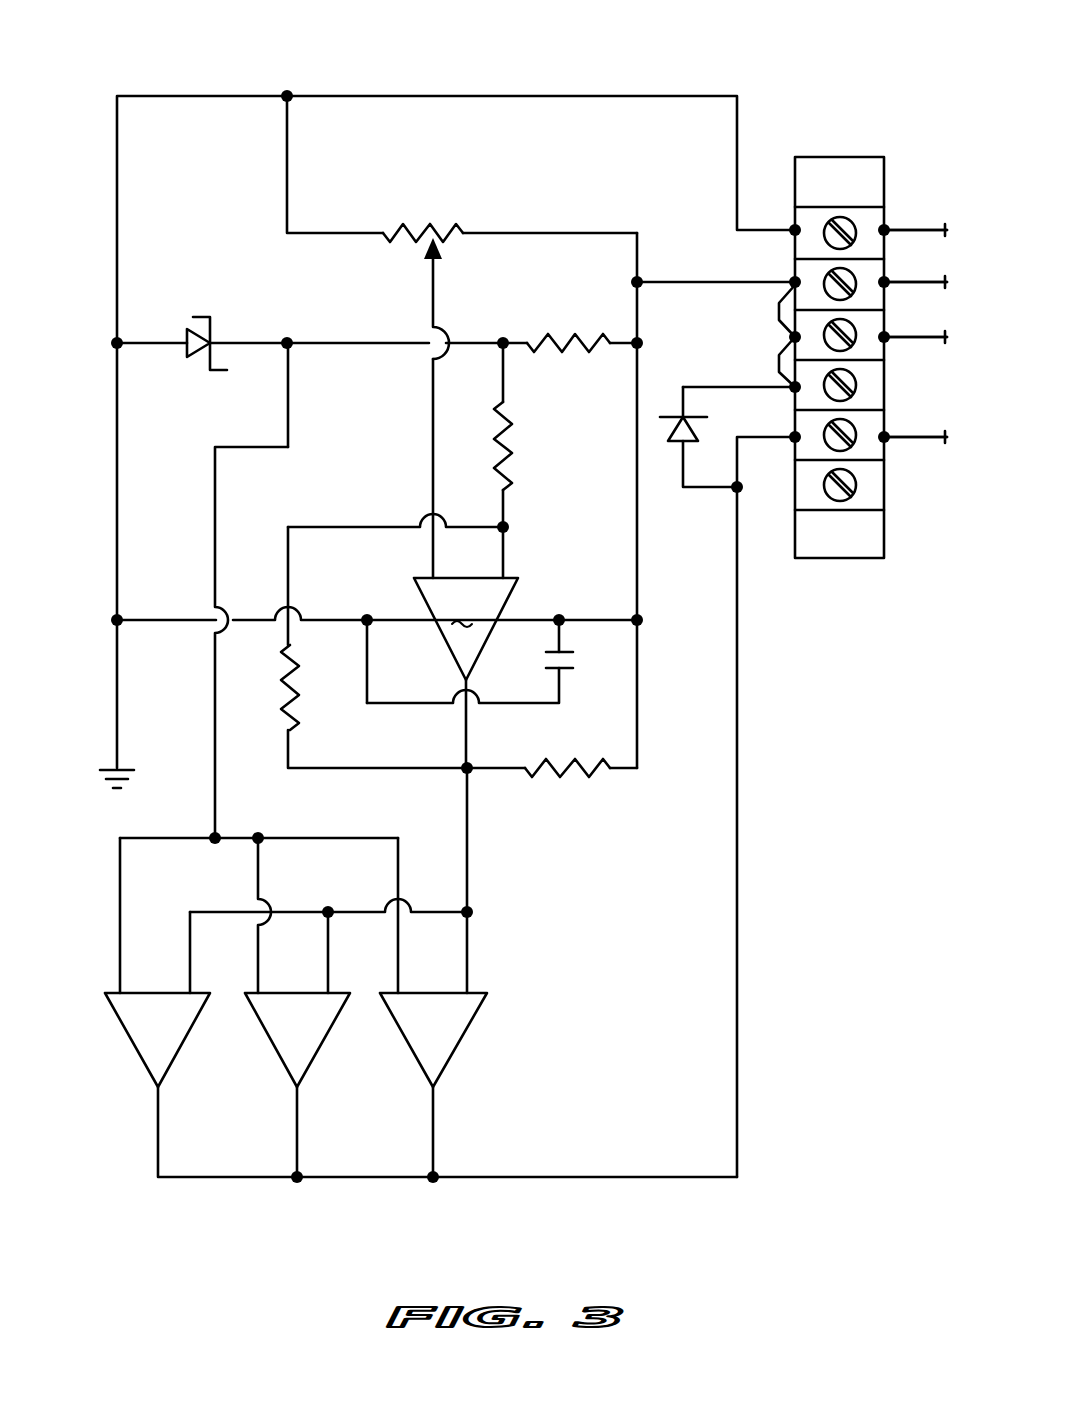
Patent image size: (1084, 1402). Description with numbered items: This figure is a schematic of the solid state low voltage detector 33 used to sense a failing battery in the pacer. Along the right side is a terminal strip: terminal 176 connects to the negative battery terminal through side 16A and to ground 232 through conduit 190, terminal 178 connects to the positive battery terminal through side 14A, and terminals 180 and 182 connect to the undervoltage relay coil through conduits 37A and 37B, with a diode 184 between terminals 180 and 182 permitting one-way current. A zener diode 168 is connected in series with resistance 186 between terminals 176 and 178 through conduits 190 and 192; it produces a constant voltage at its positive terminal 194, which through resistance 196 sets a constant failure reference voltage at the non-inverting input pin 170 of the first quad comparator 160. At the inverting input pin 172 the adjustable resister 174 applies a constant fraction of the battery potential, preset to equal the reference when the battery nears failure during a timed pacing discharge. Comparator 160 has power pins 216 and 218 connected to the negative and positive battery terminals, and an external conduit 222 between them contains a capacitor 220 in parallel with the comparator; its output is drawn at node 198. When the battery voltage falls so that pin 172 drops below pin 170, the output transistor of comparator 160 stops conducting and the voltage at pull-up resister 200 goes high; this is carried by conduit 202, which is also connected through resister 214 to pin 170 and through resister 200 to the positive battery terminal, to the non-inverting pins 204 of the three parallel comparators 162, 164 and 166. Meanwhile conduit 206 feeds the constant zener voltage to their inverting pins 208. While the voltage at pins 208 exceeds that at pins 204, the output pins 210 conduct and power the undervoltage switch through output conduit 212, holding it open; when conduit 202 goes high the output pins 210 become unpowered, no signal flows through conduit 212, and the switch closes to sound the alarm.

The low voltage detector 33 is at (775, 62).
The conduit 190 is at (553, 95).
The adjustable resister 174 is at (420, 232).
The zener diode 168 is at (213, 323).
The positive terminal 194 is at (292, 350).
The resistance 186 is at (584, 342).
The conduit 192 is at (718, 281).
The terminal 176 is at (850, 220).
The terminal 178 is at (828, 274).
The terminal 180 is at (857, 340).
The terminal 182 is at (857, 442).
The side 16A is at (918, 217).
The side 14A is at (918, 268).
The conduit 37A is at (912, 337).
The conduit 37B is at (912, 438).
The diode 184 is at (668, 416).
The output conduit 212 is at (738, 946).
The resistance 196 is at (511, 456).
The non-inverting input pin 170 is at (504, 552).
The inverting input pin 172 is at (432, 546).
The first quad comparator 160 is at (466, 629).
The resister 214 is at (290, 702).
The conduit 206 is at (214, 520).
The power pin 218 is at (532, 619).
The power pin 216 is at (394, 624).
The external conduit 222 is at (424, 705).
The capacitor 220 is at (566, 671).
The output 198 is at (468, 680).
The pull-up resister 200 is at (567, 776).
The ground 232 is at (124, 766).
The conduit 202 is at (468, 860).
The non-inverting pins 204 is at (188, 940).
The inverting pins 208 is at (119, 960).
The comparator 162 is at (160, 1040).
The comparator 164 is at (296, 1045).
The comparator 166 is at (440, 1035).
The output pins 210 is at (157, 1150).